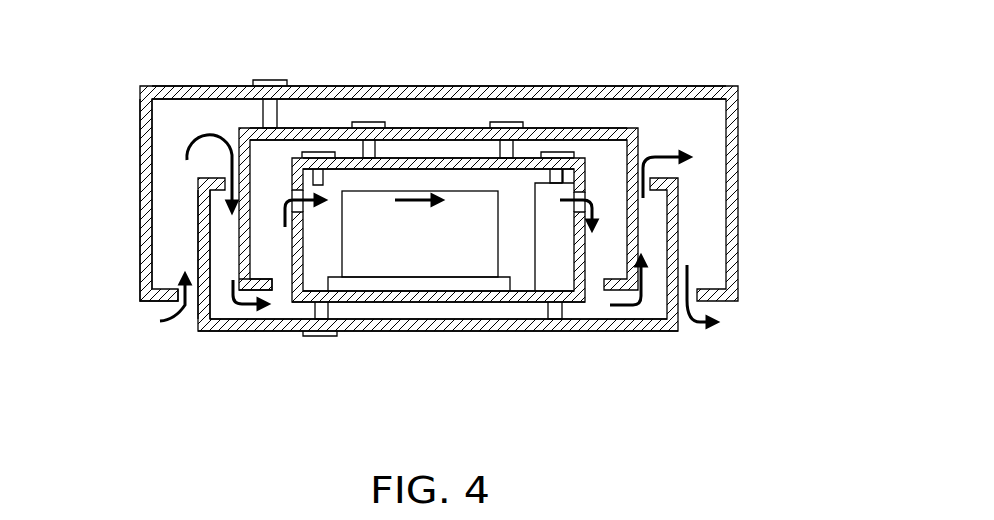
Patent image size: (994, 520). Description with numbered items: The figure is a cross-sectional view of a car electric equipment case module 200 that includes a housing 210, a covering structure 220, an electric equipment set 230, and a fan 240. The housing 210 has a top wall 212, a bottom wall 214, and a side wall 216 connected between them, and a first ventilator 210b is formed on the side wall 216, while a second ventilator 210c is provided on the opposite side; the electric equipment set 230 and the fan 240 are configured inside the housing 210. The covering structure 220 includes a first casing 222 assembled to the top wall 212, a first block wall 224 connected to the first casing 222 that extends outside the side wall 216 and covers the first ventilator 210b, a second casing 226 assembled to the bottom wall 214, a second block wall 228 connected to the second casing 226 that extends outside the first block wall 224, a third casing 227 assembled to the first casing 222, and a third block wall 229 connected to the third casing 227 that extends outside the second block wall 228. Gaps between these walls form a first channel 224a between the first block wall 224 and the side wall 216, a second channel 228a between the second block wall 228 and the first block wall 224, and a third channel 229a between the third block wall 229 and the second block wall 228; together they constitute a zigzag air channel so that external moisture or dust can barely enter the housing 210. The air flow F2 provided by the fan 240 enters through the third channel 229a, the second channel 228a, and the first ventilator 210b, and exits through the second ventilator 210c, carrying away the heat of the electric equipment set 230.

The car electric equipment case module 200 is at (770, 416).
The housing 210 is at (417, 208).
The first ventilator 210b is at (290, 198).
The second ventilator 210c is at (585, 193).
The top wall 212 is at (412, 157).
The bottom wall 214 is at (488, 302).
The side wall 216 is at (336, 258).
The covering structure 220 is at (433, 161).
The first casing 222 is at (308, 128).
The first block wall 224 is at (426, 208).
The first channel 224a is at (262, 280).
The second casing 226 is at (352, 332).
The third casing 227 is at (337, 86).
The second block wall 228 is at (369, 286).
The second channel 228a is at (220, 238).
The third block wall 229 is at (141, 150).
The third channel 229a is at (158, 233).
The electric equipment set 230 is at (465, 213).
The fan 240 is at (532, 292).
The air flow F2 is at (420, 199).